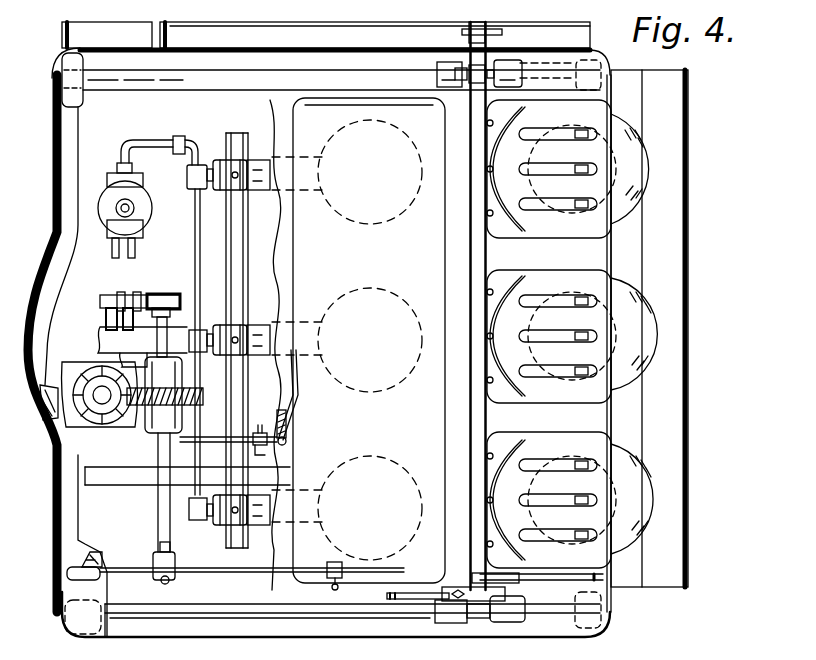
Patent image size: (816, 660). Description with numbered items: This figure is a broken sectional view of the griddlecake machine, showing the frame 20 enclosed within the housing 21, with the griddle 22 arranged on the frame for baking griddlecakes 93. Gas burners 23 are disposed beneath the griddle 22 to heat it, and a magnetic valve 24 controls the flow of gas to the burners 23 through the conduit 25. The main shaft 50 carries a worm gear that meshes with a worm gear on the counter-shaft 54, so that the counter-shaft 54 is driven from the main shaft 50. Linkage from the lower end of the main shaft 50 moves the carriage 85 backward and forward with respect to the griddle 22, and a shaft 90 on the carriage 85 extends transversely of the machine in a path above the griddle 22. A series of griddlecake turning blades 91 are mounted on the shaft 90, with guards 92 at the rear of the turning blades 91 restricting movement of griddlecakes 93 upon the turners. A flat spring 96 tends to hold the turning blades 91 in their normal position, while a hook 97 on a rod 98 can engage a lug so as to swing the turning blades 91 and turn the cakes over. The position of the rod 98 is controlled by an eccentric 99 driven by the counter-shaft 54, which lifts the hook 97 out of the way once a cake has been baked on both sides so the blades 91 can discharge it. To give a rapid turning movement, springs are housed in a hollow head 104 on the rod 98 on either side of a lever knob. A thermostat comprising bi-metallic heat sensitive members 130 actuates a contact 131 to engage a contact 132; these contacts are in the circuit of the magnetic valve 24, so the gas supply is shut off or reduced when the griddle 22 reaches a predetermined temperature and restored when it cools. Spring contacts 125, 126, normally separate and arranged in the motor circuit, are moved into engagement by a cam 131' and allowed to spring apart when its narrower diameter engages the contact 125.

The frame 20 is at (203, 66).
The housing 21 is at (62, 134).
The griddle 22 is at (303, 123).
The gas burners 23 is at (392, 222).
The magnetic valve 24 is at (148, 200).
The conduit 25 is at (152, 143).
The main shaft 50 is at (85, 382).
The counter-shaft 54 is at (160, 548).
The carriage 85 is at (450, 90).
The shaft 90 is at (470, 210).
The griddlecake turning blades 91 is at (587, 110).
The guards 92 is at (497, 362).
The griddlecakes 93 is at (641, 157).
The flat spring 96 is at (392, 600).
The hook 97 is at (330, 562).
The rod 98 is at (190, 573).
The eccentric 99 is at (153, 562).
The hollow head 104 is at (100, 580).
The contact 125 is at (113, 293).
The contact 126 is at (137, 293).
The bi-metallic heat sensitive members 130 is at (293, 388).
The contact 131 is at (267, 411).
The cam 131' is at (215, 340).
The contact 132 is at (272, 448).